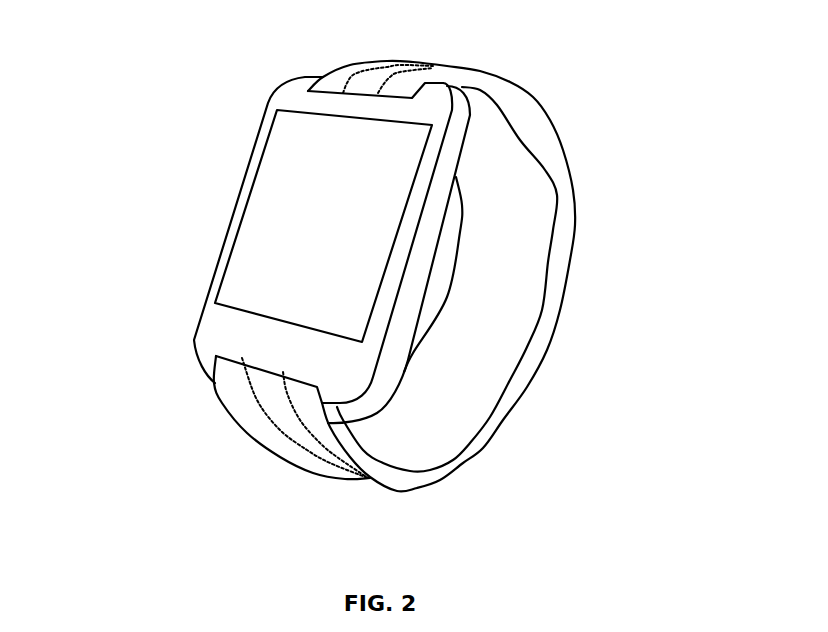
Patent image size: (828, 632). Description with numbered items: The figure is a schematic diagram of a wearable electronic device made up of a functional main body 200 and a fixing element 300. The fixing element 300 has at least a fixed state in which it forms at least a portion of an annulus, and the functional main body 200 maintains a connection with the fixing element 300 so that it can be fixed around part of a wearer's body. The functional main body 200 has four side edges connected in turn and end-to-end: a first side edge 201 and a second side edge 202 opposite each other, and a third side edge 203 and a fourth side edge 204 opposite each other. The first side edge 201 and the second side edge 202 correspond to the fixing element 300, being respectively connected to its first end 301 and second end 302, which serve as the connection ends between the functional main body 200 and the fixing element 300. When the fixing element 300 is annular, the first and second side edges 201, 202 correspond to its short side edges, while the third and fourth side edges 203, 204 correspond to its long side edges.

The functional main body 200 is at (258, 255).
The first side edge 201 is at (338, 105).
The second side edge 202 is at (263, 358).
The third side edge 203 is at (410, 258).
The fourth side edge 204 is at (226, 230).
The fixing element 300 is at (493, 342).
The first end 301 is at (375, 88).
The second end 302 is at (295, 387).